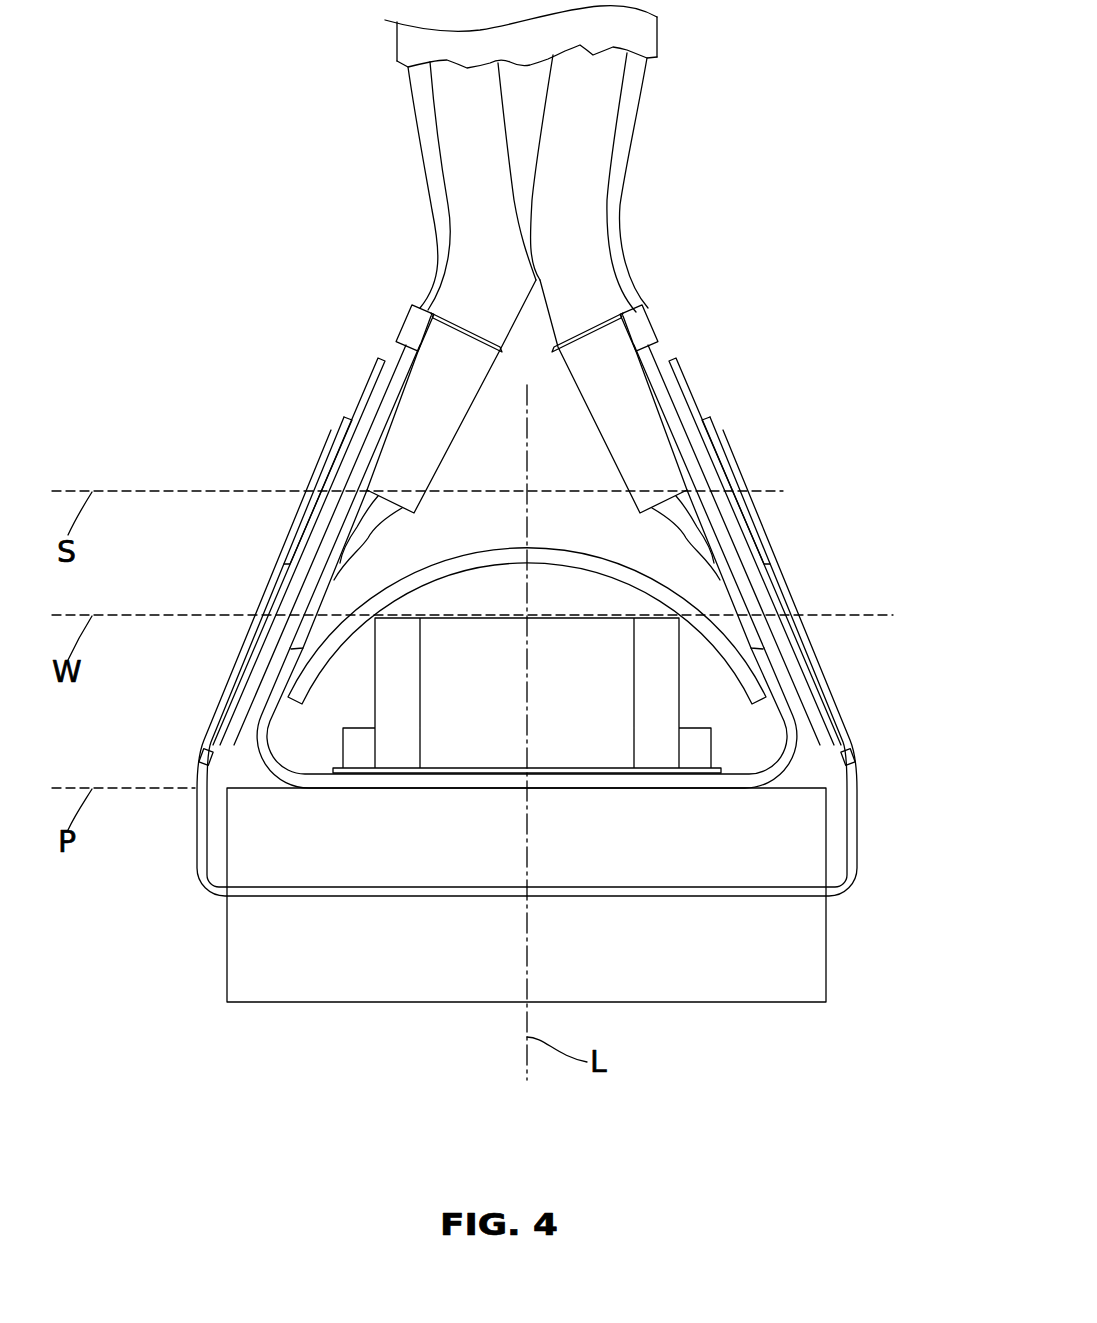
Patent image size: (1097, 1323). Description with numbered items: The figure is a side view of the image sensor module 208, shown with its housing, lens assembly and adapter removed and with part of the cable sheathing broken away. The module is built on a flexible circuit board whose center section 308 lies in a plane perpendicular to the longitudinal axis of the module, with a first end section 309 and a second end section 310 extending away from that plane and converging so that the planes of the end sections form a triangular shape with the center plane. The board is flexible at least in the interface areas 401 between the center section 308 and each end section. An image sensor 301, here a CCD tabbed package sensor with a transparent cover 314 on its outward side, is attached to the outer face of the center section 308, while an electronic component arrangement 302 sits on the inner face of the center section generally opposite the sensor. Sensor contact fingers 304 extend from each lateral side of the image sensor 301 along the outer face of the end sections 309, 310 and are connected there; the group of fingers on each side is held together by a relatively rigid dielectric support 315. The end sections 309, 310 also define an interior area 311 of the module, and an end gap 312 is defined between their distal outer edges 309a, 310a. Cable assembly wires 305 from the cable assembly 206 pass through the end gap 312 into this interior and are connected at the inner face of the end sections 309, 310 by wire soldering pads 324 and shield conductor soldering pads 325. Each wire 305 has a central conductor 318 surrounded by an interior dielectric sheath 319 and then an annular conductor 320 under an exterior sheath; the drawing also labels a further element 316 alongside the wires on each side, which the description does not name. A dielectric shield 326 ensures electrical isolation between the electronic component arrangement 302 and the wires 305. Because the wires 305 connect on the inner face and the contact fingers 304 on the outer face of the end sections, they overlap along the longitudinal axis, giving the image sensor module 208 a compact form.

The cable assembly 206 is at (652, 40).
The cable assembly wires 305 is at (475, 245).
The end gap 312 is at (532, 313).
The annular conductor 320 is at (601, 433).
The outer edge of second end section 310a is at (413, 304).
The outer edge of first end section 309a is at (641, 304).
The shield conductor soldering pads 325 is at (626, 338).
The second end section 310 is at (397, 363).
The first end section 309 is at (690, 488).
The interior area 311 is at (557, 417).
The strip 316 is at (683, 405).
The interior dielectric sheath 319 is at (702, 462).
The dielectric support 315 is at (830, 718).
The interface areas 401 is at (814, 760).
The central conductor 318 is at (710, 557).
The wire soldering pads 324 is at (745, 623).
The center section 308 is at (502, 780).
The dielectric shield 326 is at (701, 615).
The electronic component arrangement 302 is at (598, 699).
The transparent cover 314 is at (700, 967).
The image sensor 301 is at (698, 865).
The sensor contact fingers 304 is at (857, 824).
The image sensor module 208 is at (849, 491).